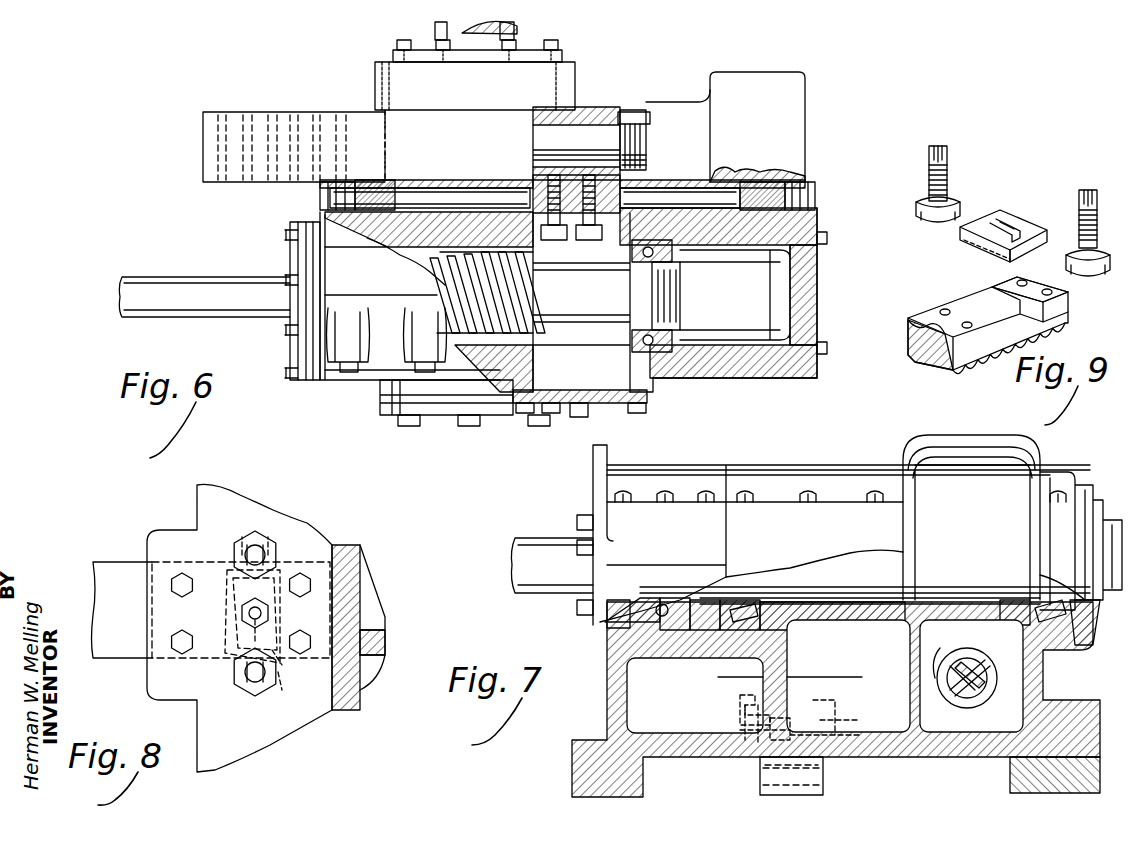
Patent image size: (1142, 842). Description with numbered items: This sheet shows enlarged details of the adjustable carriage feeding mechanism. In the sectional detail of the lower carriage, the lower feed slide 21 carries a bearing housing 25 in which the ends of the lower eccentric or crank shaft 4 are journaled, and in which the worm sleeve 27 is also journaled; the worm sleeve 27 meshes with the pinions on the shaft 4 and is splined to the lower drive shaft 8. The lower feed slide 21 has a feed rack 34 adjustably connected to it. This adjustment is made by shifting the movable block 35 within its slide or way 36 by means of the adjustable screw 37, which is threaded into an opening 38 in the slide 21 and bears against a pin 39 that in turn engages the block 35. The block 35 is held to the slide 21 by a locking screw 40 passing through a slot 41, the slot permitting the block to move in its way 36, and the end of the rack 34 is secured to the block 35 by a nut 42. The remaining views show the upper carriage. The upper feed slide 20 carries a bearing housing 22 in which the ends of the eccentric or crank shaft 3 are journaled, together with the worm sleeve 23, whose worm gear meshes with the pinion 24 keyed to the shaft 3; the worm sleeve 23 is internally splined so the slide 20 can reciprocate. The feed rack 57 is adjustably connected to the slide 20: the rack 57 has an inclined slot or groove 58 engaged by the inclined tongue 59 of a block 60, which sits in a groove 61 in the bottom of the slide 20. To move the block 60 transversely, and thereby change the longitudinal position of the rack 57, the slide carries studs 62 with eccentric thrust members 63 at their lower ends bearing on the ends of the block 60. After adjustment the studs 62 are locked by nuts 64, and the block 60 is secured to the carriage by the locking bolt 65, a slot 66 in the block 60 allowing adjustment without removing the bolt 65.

In FIG. 7, the eccentric or crank shaft 3 is at (537, 580).
In FIG. 6, the lower eccentric or crank shaft 4 is at (505, 29).
In FIG. 6, the lower drive shaft 8 is at (215, 290).
In FIG. 7, the lower drive shaft 8 is at (732, 684).
In FIG. 8, the upper feed slide 20 is at (323, 708).
In FIG. 7, the upper feed slide 20 is at (953, 760).
In FIG. 6, the lower feed slide 21 is at (746, 362).
In FIG. 7, the bearing housing 22 is at (975, 455).
In FIG. 7, the worm sleeve 23 is at (940, 686).
In FIG. 7, the pinion 24 is at (940, 650).
In FIG. 6, the bearing housing 25 is at (609, 398).
In FIG. 6, the worm sleeve 27 is at (538, 328).
In FIG. 6, the feed rack 34 is at (306, 123).
In FIG. 6, the movable block 35 is at (588, 107).
In FIG. 6, the slide or way 36 is at (630, 183).
In FIG. 6, the adjustable screw 37 is at (365, 195).
In FIG. 6, the opening 38 is at (322, 204).
In FIG. 6, the pin 39 is at (433, 196).
In FIG. 6, the locking screw 40 is at (560, 244).
In FIG. 6, the slot 41 is at (595, 244).
In FIG. 6, the nut 42 is at (640, 111).
In FIG. 9, the feed rack 57 is at (1075, 323).
In FIG. 8, the feed rack 57 is at (112, 650).
In FIG. 7, the feed rack 57 is at (823, 780).
In FIG. 9, the inclined slot or groove 58 is at (970, 300).
In FIG. 9, the inclined tongue 59 is at (1028, 252).
In FIG. 9, the block 60 is at (1000, 219).
In FIG. 8, the groove 61 is at (226, 604).
In FIG. 7, the groove 61 is at (762, 775).
In FIG. 9, the stud 62 is at (947, 170).
In FIG. 8, the stud 62 is at (262, 550).
In FIG. 7, the stud 62 is at (740, 722).
In FIG. 9, the eccentric thrust member 63 is at (950, 208).
In FIG. 8, the eccentric thrust member 63 is at (282, 667).
In FIG. 8, the nut 64 is at (255, 538).
In FIG. 7, the nut 64 is at (740, 705).
In FIG. 8, the locking bolt 65 is at (262, 612).
In FIG. 9, the slot 66 is at (1012, 228).
In FIG. 8, the slot 66 is at (252, 628).